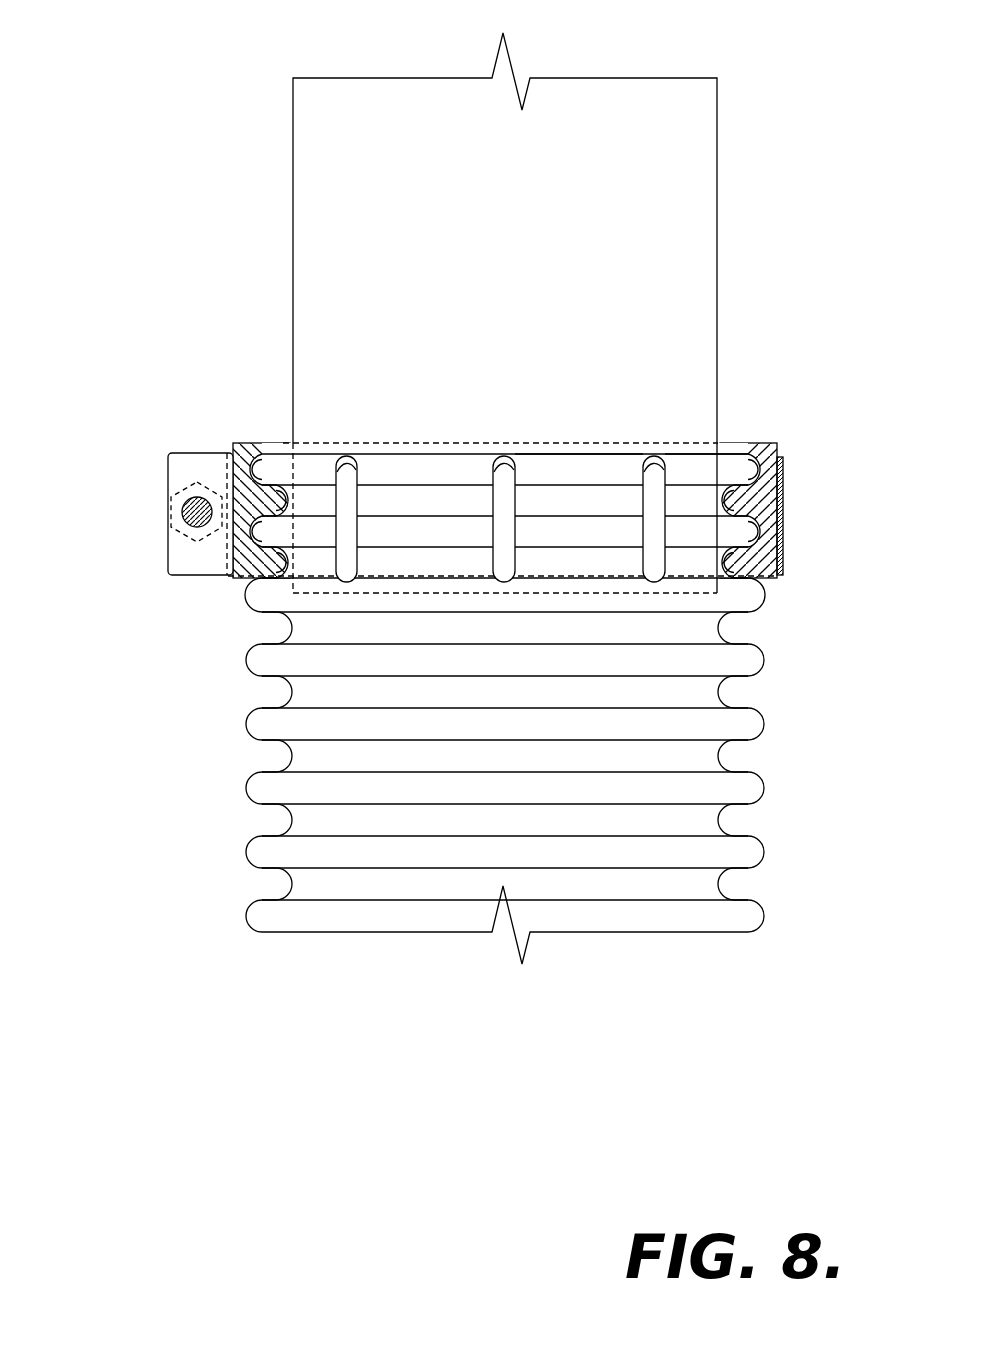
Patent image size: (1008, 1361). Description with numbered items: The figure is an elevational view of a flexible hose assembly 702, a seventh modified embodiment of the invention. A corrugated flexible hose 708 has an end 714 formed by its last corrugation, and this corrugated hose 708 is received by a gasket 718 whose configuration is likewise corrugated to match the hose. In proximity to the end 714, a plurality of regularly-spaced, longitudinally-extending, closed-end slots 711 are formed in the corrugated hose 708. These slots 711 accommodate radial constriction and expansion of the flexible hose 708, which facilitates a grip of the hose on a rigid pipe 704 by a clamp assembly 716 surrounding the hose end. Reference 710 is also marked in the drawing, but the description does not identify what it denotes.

The flexible hose assembly 702 is at (172, 146).
The rigid pipe 704 is at (717, 78).
The flexible hose 708 is at (748, 932).
The bellows crest 710 is at (680, 457).
The closed-end slots 711 is at (512, 455).
The end 714 is at (545, 455).
The clamp assembly 716 is at (788, 455).
The gasket 718 is at (238, 443).